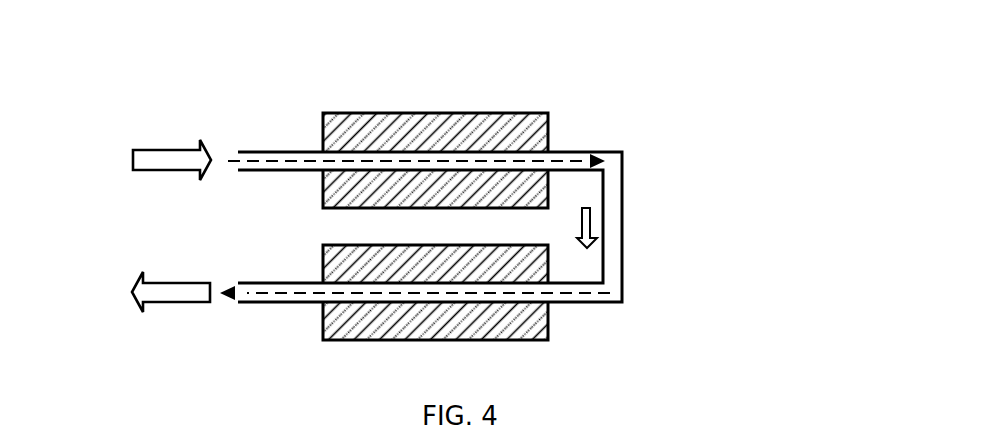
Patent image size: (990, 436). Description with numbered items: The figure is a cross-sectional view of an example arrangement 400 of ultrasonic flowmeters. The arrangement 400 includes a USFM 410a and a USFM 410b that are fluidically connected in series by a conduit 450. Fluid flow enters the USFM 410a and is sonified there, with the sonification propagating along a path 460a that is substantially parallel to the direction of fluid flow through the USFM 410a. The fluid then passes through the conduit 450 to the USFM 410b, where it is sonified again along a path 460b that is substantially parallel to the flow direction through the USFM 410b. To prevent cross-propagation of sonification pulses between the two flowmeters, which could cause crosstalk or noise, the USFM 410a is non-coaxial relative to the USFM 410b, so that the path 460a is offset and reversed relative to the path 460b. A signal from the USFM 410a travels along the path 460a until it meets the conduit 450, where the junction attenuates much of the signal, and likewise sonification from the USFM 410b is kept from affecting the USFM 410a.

The arrangement 400 is at (113, 106).
The USFM 410a is at (360, 113).
The USFM 410b is at (543, 340).
The conduit 450 is at (624, 193).
The path 460a is at (548, 162).
The path 460b is at (587, 293).